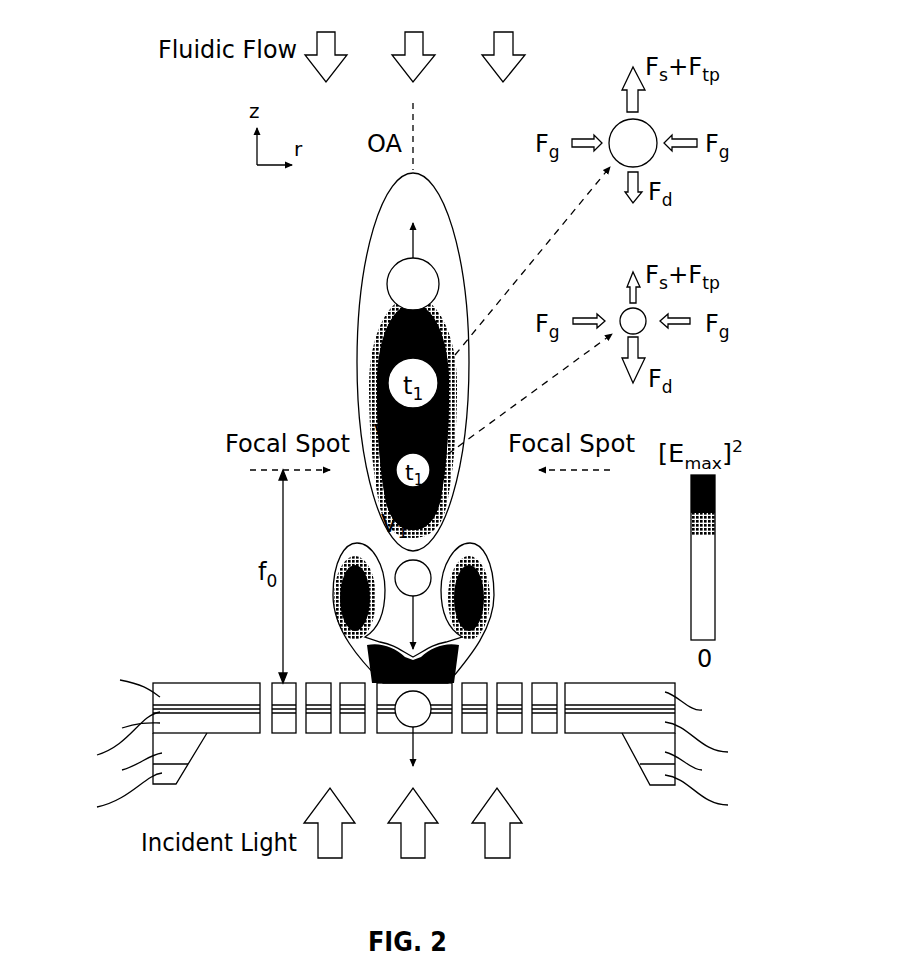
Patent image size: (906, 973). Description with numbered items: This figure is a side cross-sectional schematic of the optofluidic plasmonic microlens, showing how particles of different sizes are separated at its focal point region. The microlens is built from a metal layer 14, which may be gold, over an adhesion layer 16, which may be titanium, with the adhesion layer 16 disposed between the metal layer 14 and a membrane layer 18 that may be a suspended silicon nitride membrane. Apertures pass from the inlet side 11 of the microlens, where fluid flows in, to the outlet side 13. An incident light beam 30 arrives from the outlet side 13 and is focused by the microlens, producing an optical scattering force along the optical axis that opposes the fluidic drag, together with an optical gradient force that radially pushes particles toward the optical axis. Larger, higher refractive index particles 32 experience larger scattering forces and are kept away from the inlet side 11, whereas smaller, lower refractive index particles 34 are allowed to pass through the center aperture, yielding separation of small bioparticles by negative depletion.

The inlet side 11 is at (210, 697).
The outlet side 13 is at (569, 752).
The metal layer 14 is at (245, 692).
The adhesion layer 16 is at (598, 708).
The membrane layer 18 is at (228, 722).
The light beam 30 is at (413, 751).
The larger particles 32 is at (390, 290).
The smaller particles 34 is at (432, 578).